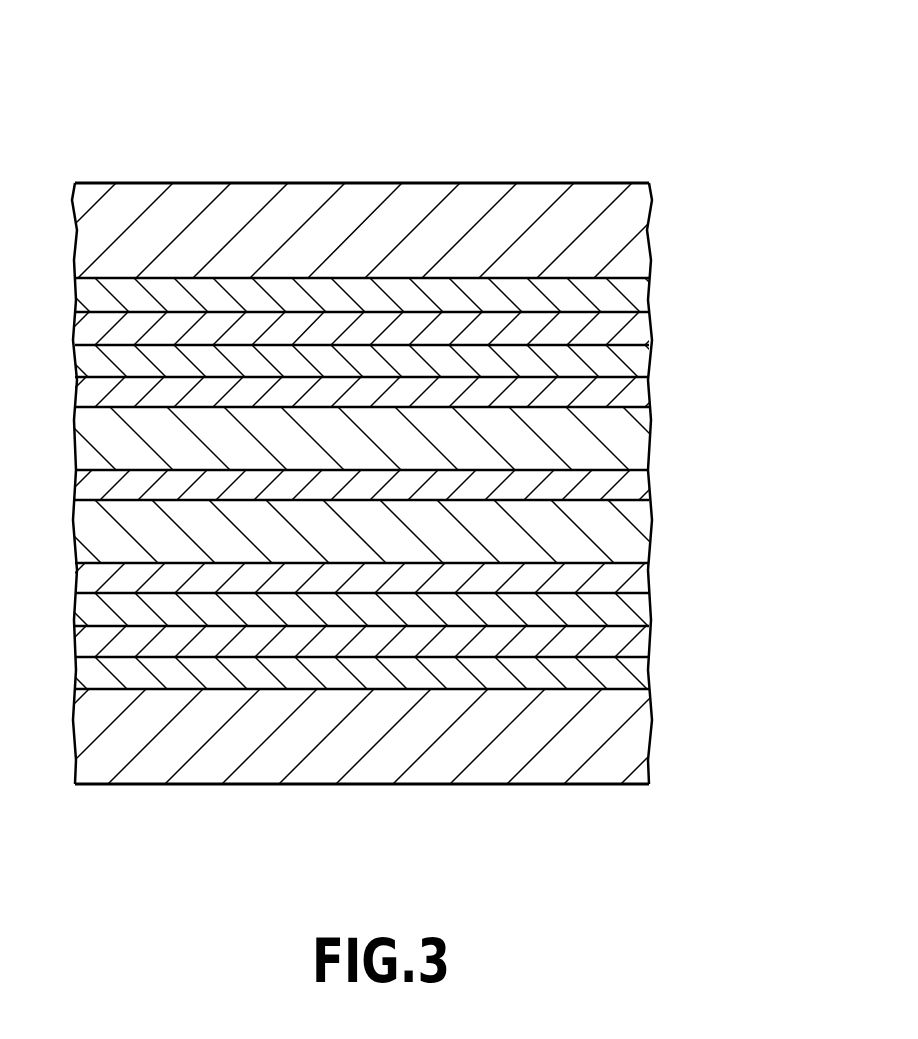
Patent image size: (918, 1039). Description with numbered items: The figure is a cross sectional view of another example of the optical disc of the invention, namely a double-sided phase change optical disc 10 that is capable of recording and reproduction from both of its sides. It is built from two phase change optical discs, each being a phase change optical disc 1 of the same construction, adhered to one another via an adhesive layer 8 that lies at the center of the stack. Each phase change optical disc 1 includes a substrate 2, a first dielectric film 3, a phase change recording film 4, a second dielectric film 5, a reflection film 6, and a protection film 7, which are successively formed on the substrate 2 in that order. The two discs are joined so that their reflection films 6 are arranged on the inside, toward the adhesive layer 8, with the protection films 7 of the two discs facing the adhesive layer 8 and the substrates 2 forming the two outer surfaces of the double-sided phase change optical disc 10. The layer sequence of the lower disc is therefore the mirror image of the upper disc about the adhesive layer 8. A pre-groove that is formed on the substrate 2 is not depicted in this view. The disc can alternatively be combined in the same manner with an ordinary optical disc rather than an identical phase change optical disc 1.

The double-sided phase change optical disc 10 is at (656, 134).
The phase change optical disc 1 is at (737, 193).
The substrate 2 is at (652, 228).
The first dielectric film 3 is at (652, 296).
The phase change recording film 4 is at (652, 325).
The second dielectric film 5 is at (652, 362).
The reflection film 6 is at (652, 394).
The protection film 7 is at (652, 441).
The adhesive layer 8 is at (652, 485).